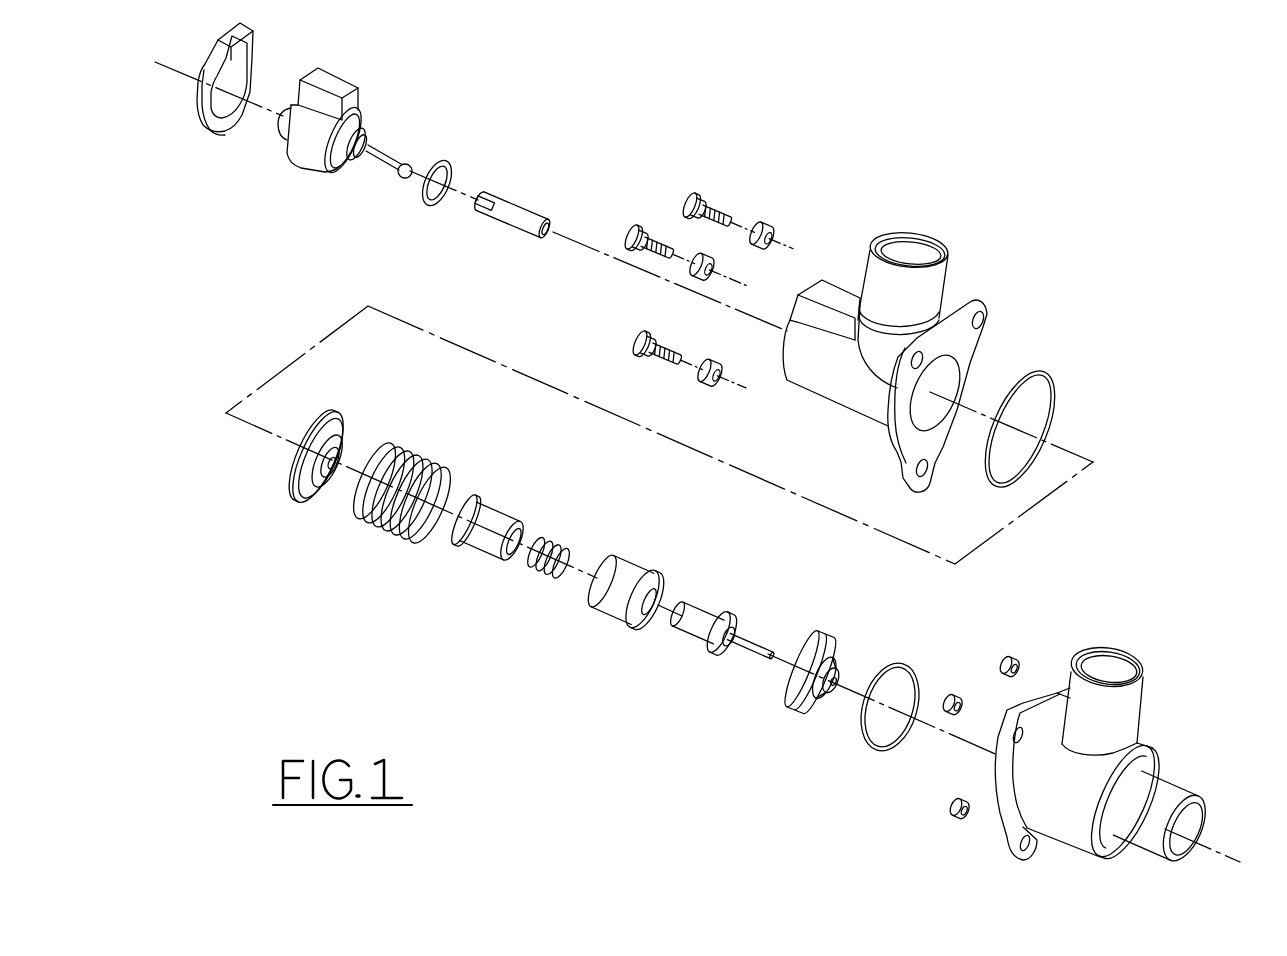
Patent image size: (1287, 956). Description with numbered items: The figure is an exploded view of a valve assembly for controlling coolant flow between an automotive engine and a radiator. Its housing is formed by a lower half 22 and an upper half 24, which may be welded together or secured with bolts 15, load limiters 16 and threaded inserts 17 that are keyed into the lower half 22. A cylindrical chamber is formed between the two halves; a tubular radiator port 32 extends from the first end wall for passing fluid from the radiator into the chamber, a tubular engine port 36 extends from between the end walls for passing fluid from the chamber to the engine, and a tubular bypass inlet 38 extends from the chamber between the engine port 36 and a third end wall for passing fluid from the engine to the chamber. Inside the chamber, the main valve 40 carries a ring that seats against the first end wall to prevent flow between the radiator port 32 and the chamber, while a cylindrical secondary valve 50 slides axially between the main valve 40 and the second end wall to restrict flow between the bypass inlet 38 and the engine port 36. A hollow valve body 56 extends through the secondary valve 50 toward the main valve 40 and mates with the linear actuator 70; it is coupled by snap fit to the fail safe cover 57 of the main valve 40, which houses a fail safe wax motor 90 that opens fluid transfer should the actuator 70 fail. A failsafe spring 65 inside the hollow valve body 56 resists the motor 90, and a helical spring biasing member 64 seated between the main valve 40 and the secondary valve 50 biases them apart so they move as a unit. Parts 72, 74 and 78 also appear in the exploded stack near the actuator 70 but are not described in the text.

The bolts 15 is at (710, 198).
The load limiters 16 is at (767, 221).
The threaded inserts 17 is at (950, 692).
The lower half 22 is at (1153, 751).
The upper half 24 is at (830, 283).
The radiator port 32 is at (1190, 821).
The engine port 36 is at (1103, 661).
The bypass inlet 38 is at (927, 246).
The main valve 40 is at (842, 648).
The secondary valve 50 is at (338, 414).
The hollow valve body 56 is at (492, 510).
The fail safe cover 57 is at (630, 568).
The spring biasing member 64 is at (430, 460).
The failsafe spring 65 is at (557, 546).
The linear actuator 70 is at (313, 158).
The washer ring 72 is at (448, 160).
The coupling sleeve 74 is at (522, 206).
The retaining clip 78 is at (202, 133).
The fail safe wax motor 90 is at (708, 611).